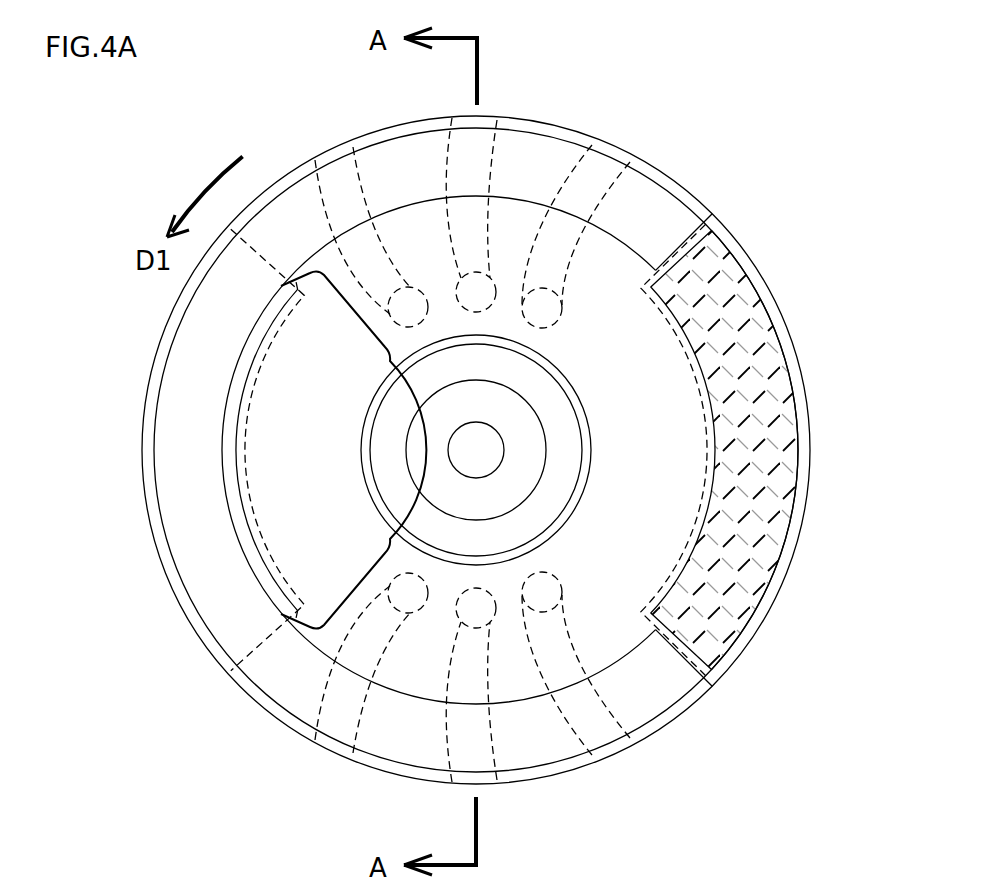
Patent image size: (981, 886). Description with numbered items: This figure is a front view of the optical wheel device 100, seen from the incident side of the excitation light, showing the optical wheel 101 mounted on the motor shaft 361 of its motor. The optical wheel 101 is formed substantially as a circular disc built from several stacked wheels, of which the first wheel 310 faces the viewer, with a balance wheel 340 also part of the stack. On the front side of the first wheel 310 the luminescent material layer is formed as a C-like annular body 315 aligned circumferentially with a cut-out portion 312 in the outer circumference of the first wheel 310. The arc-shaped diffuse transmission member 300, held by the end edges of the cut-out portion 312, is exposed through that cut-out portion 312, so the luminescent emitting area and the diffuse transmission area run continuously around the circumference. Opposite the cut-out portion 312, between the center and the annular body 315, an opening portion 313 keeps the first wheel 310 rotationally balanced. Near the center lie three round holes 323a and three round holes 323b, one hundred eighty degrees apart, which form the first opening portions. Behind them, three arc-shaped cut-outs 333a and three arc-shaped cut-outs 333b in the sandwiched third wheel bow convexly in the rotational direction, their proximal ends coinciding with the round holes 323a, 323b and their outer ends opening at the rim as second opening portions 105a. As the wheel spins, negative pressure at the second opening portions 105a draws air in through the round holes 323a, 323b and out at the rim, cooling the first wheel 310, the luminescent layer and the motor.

The optical wheel device 100 is at (694, 112).
The optical wheel 101 is at (557, 116).
The second opening portions 105a is at (619, 135).
The diffuse transmission member 300 is at (757, 328).
The first wheel 310 is at (250, 688).
The cut-out portion 312 is at (727, 611).
The opening portion 313 is at (288, 572).
The annular body 315 is at (200, 548).
The round holes 323a is at (395, 588).
The round holes 323b is at (557, 325).
The arc-shaped cut-outs 333a is at (634, 693).
The arc-shaped cut-outs 333b is at (606, 192).
The balance wheel 340 is at (508, 565).
The motor shaft 361 is at (407, 433).